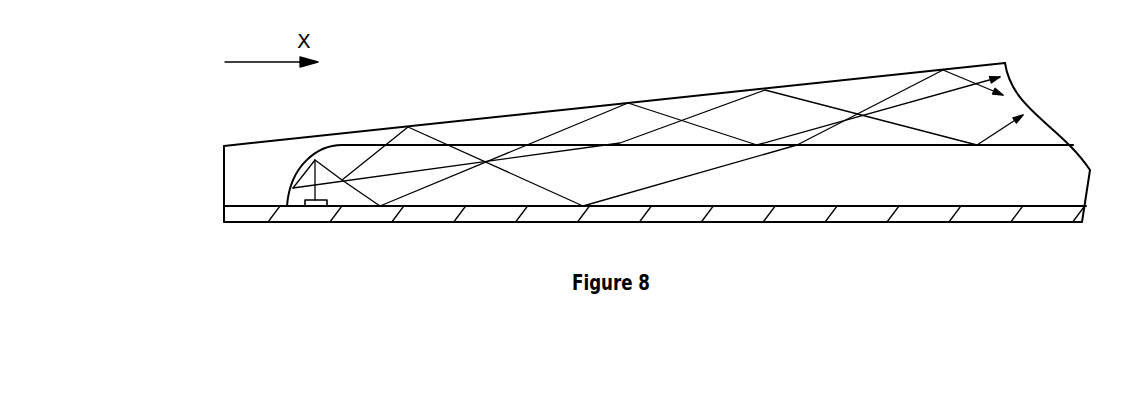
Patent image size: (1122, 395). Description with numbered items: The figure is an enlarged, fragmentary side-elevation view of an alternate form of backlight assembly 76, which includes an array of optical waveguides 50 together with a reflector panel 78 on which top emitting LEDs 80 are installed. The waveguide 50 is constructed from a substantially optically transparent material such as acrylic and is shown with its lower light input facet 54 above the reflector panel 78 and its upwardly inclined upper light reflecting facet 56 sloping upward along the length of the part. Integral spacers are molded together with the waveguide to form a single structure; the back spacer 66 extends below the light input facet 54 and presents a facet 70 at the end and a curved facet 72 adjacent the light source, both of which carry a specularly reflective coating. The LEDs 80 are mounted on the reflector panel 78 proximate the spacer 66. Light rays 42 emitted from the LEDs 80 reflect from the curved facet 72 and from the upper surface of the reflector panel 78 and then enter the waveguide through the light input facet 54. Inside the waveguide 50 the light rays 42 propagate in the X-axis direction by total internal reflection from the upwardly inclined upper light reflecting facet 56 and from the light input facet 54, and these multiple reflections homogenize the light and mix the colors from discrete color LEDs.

The light rays 42 is at (368, 207).
The optical waveguide 50 is at (826, 59).
The lower light input facet 54 is at (902, 145).
The upwardly inclined upper light reflecting facet 56 is at (545, 110).
The back spacer 66 is at (250, 177).
The facet of the spacer 70 is at (224, 177).
The curved facet 72 is at (298, 170).
The backlight assembly 76 is at (450, 82).
The reflector panel 78 is at (815, 212).
The top emitting LEDs 80 is at (316, 207).